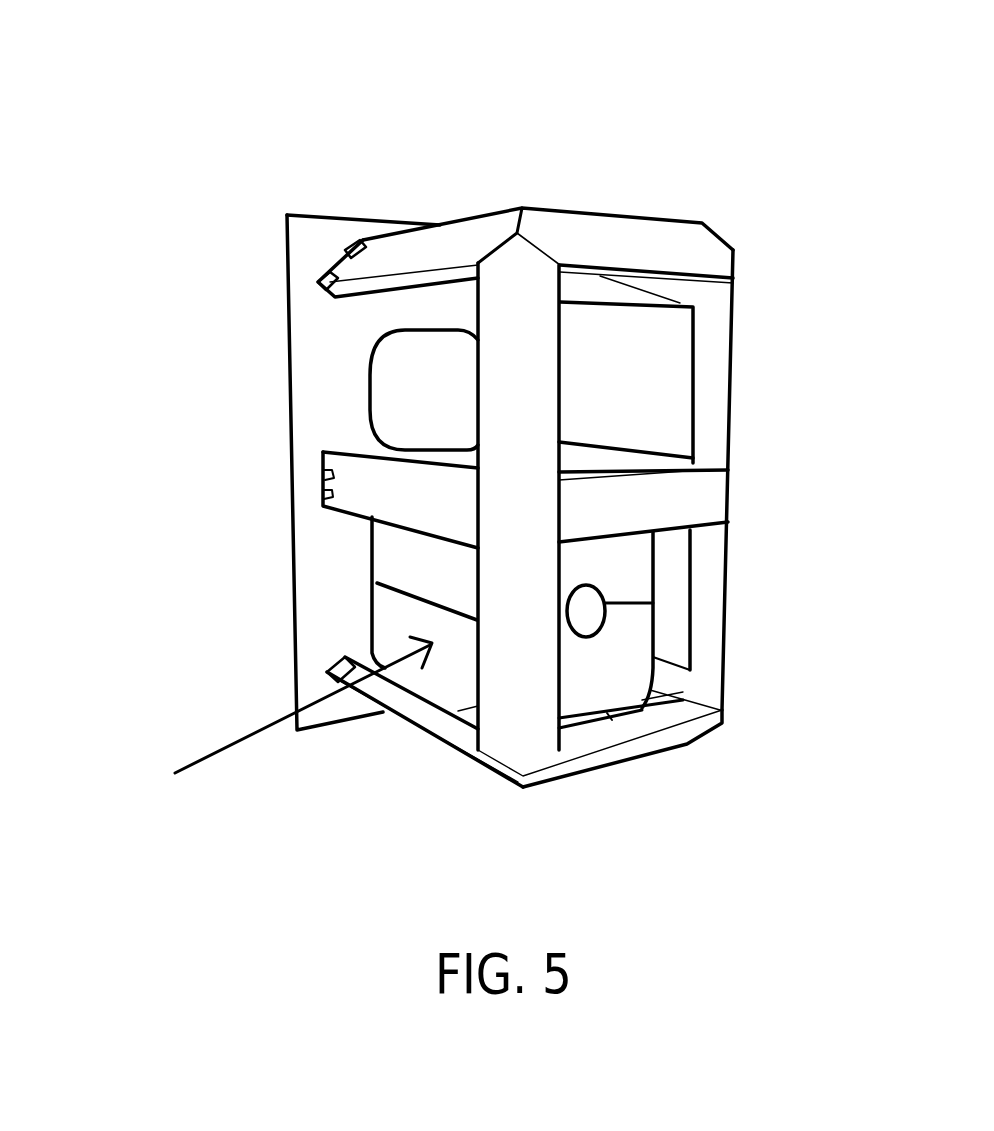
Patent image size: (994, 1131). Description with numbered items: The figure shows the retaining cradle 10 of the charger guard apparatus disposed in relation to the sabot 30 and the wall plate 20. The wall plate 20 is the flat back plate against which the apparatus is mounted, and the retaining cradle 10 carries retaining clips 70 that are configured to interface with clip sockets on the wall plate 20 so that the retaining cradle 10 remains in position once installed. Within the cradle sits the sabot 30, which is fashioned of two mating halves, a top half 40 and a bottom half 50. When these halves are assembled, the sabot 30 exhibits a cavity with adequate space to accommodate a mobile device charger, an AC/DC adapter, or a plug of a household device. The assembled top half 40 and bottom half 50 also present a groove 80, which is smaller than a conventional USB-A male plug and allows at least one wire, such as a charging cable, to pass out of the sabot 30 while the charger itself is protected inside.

The retaining cradle 10 is at (653, 250).
The wall plate 20 is at (318, 340).
The sabot 30 is at (272, 733).
The top half 40 is at (407, 568).
The bottom half 50 is at (633, 672).
The retaining clips 70 is at (348, 252).
The groove 80 is at (590, 600).